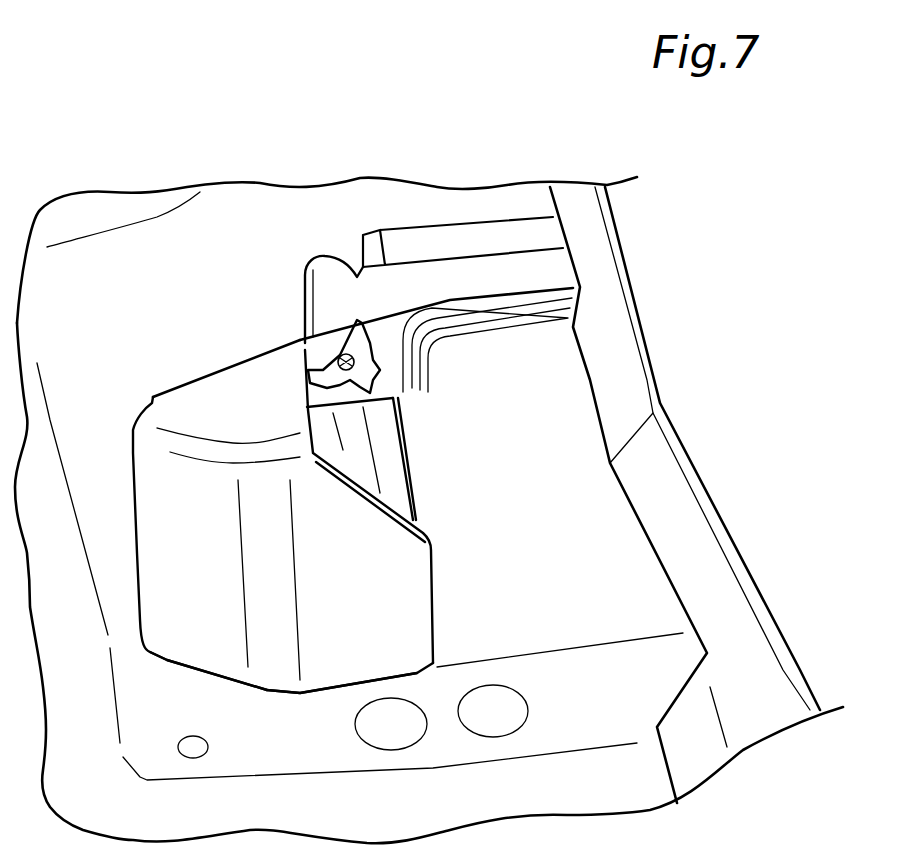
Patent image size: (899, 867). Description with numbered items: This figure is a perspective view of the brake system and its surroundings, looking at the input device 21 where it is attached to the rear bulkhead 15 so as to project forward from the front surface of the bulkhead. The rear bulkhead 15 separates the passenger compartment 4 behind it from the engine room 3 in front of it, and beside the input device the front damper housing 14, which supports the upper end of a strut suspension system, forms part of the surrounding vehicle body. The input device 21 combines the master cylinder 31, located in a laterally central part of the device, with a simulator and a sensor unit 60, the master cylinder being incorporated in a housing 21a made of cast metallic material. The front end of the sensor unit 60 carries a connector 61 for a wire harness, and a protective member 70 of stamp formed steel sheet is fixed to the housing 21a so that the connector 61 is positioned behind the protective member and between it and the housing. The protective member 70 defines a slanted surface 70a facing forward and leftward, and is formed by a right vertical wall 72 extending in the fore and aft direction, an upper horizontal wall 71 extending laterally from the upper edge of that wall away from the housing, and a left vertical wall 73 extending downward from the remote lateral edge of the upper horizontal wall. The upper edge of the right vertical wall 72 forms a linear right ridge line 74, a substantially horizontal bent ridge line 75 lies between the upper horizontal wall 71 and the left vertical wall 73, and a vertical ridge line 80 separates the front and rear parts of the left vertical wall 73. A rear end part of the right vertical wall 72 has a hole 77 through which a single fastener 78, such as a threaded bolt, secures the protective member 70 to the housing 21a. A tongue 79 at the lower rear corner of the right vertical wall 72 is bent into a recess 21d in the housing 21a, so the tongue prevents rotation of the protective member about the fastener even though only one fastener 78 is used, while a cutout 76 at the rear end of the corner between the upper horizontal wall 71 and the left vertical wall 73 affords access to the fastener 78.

The engine room 3 is at (112, 331).
The passenger compartment 4 is at (752, 441).
The front damper housing 14 is at (168, 225).
The rear bulkhead 15 is at (578, 195).
The input device 21 is at (400, 195).
The housing 21a is at (358, 280).
The recess 21d is at (410, 394).
The master cylinder 31 is at (490, 272).
The sensor unit 60 is at (575, 390).
The connector 61 is at (390, 450).
The protective member 70 is at (253, 343).
The slanted surface 70a is at (184, 652).
The upper horizontal wall 71 is at (232, 385).
The right vertical wall 72 is at (330, 372).
The left vertical wall 73 is at (280, 682).
The right ridge line 74 is at (172, 380).
The bent ridge line 75 is at (162, 440).
The cutout 76 is at (400, 500).
The hole 77 is at (460, 346).
The fastener 78 is at (346, 356).
The tongue 79 is at (418, 369).
The vertical ridge line 80 is at (255, 605).